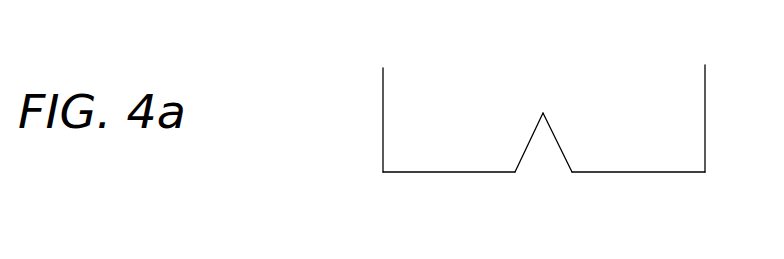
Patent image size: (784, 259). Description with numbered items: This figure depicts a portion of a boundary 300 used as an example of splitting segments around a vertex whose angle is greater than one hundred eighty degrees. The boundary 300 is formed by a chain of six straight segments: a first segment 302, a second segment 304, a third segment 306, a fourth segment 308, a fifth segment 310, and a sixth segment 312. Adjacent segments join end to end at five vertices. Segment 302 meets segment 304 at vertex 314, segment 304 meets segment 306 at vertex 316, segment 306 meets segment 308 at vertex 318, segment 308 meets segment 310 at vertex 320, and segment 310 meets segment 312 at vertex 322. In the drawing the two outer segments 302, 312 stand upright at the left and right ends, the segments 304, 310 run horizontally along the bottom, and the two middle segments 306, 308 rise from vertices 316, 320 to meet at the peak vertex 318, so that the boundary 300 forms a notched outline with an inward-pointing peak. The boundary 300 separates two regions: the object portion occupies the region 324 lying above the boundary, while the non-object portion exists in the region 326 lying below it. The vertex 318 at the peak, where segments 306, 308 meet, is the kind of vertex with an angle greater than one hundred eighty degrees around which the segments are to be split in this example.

The boundary 300 is at (391, 73).
The segment 302 is at (383, 120).
The segment 304 is at (445, 170).
The segment 306 is at (527, 139).
The segment 308 is at (559, 140).
The segment 310 is at (638, 170).
The segment 312 is at (705, 119).
The vertex 314 is at (383, 172).
The vertex 316 is at (515, 172).
The vertex 318 is at (543, 113).
The vertex 320 is at (572, 172).
The vertex 322 is at (705, 172).
The region 324 is at (578, 54).
The region 326 is at (580, 226).